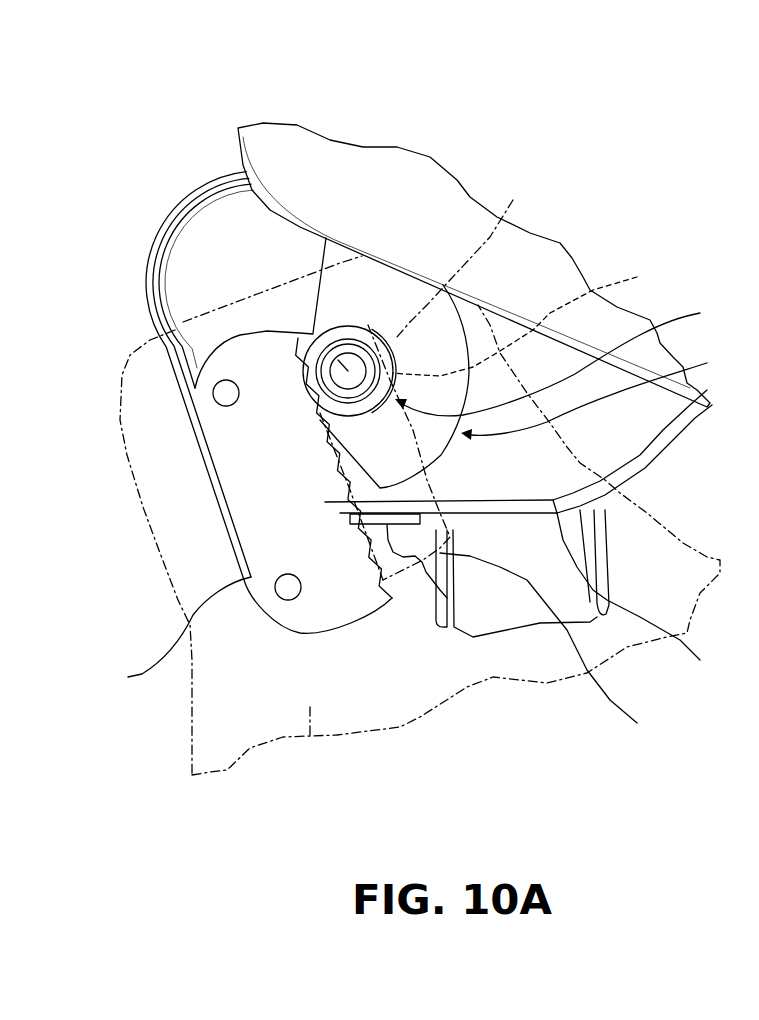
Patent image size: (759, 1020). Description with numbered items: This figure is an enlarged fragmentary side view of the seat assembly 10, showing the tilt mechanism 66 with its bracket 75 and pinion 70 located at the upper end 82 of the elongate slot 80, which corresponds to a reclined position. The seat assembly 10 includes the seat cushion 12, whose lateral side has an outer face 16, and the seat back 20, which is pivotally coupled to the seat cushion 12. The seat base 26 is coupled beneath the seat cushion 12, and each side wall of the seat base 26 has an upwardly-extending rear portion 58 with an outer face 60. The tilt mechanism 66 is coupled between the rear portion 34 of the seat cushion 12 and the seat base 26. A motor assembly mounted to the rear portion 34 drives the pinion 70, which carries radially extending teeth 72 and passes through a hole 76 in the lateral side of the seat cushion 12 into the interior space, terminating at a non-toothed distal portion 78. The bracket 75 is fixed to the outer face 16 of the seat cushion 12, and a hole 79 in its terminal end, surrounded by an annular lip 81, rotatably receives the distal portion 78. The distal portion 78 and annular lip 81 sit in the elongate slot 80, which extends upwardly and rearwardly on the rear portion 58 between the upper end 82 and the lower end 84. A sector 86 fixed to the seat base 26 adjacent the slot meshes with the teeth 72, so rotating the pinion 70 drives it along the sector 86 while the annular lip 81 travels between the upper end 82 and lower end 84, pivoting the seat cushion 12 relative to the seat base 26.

The seat assembly 10 is at (410, 429).
The seat cushion 12 is at (663, 450).
The outer face 16 is at (216, 254).
The seat back 20 is at (474, 265).
The seat base 26 is at (547, 698).
The rear portion 34 is at (574, 600).
The rear portion 58 is at (312, 740).
The outer face 60 is at (371, 676).
The tilt mechanism 66 is at (179, 507).
The pinion 70 is at (522, 386).
The teeth 72 is at (528, 320).
The bracket 75 is at (596, 395).
The hole 76 is at (391, 353).
The distal portion 78 is at (312, 325).
The hole 79 is at (331, 341).
The elongate slot 80 is at (420, 584).
The annular lip 81 is at (352, 327).
The upper end 82 is at (447, 374).
The lower end 84 is at (551, 644).
The sector 86 is at (179, 632).